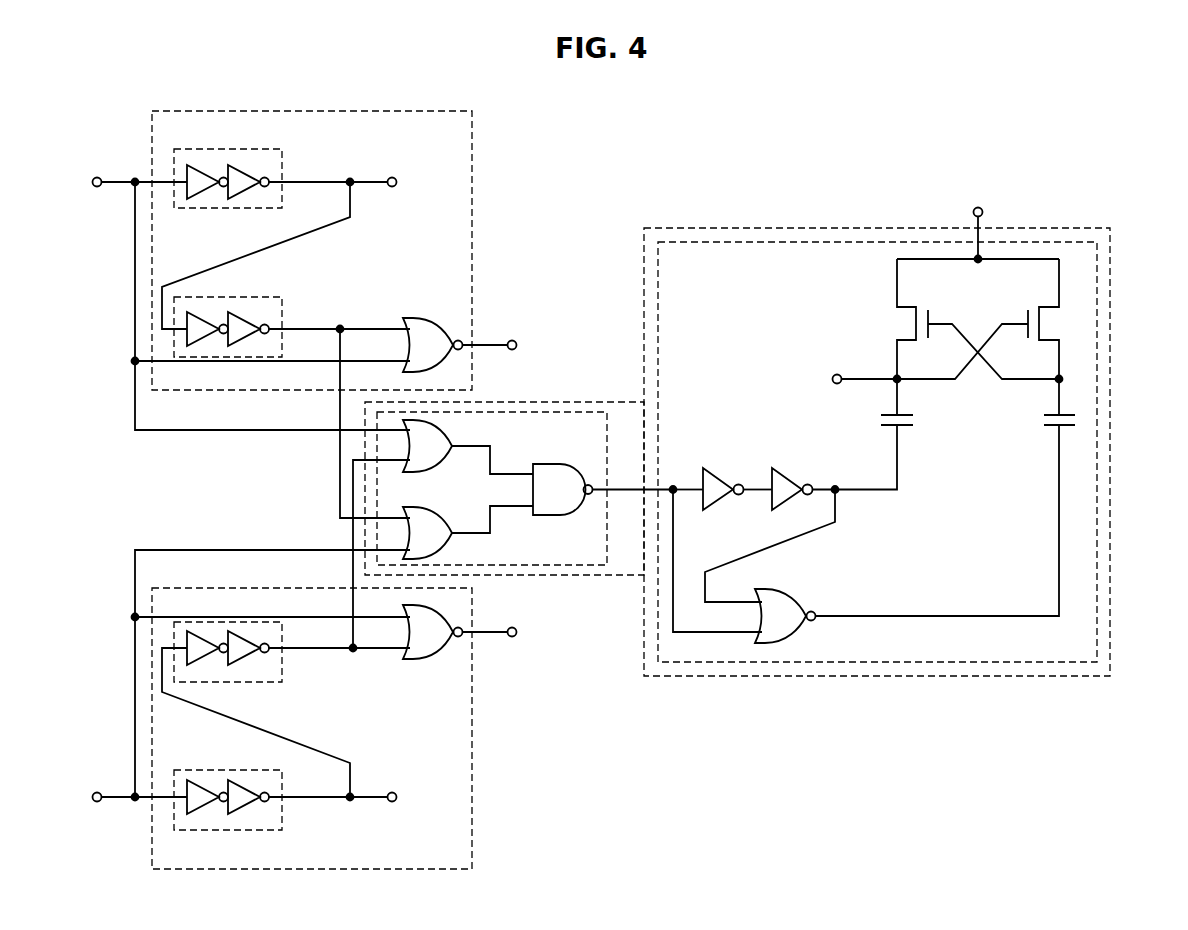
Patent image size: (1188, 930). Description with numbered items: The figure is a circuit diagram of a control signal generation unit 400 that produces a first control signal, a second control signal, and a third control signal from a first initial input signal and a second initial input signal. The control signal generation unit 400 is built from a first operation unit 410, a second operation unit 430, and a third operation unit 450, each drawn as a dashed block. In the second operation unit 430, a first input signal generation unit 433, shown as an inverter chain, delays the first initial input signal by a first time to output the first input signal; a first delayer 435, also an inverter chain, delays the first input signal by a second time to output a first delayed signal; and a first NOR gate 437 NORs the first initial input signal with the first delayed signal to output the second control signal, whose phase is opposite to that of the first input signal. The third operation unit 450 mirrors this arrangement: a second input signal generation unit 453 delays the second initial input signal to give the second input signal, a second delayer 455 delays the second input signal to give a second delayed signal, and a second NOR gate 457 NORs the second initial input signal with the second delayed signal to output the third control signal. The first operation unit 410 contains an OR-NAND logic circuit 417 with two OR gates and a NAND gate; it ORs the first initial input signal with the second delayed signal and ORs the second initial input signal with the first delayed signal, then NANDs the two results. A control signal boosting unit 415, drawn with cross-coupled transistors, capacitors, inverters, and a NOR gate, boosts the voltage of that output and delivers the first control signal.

The control signal generation unit 400 is at (722, 141).
The first operation unit 410 is at (1112, 400).
The control signal boosting unit 415 is at (877, 667).
The OR-NAND logic circuit 417 is at (577, 568).
The second operation unit 430 is at (472, 249).
The first input signal generation unit 433 is at (250, 148).
The first delayer 435 is at (232, 297).
The first NOR gate 437 is at (430, 316).
The third operation unit 450 is at (472, 727).
The second input signal generation unit 453 is at (237, 830).
The second delayer 455 is at (237, 682).
The second NOR gate 457 is at (428, 662).